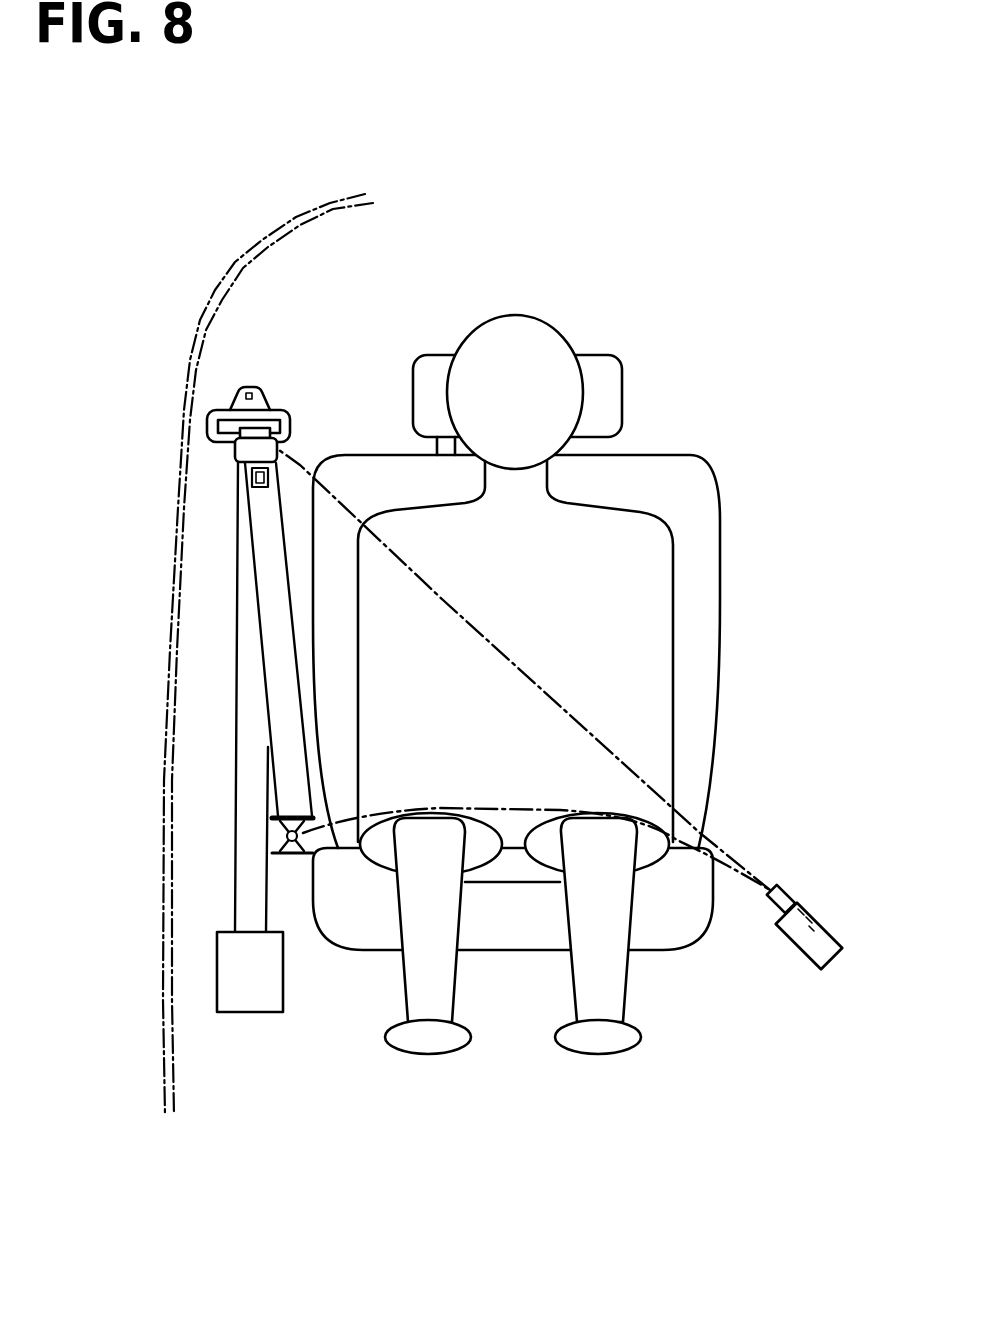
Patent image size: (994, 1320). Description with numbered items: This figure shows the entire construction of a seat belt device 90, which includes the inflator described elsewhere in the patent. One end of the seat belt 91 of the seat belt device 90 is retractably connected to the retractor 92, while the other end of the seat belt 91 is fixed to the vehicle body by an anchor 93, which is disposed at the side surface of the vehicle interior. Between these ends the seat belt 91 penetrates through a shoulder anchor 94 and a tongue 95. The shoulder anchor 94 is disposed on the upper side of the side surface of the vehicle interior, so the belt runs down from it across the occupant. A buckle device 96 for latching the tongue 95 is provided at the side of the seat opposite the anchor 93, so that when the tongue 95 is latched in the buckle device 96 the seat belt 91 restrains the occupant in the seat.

The seat belt device 90 is at (228, 1132).
The seat belt 91 is at (247, 868).
The retractor 92 is at (227, 980).
The anchor 93 is at (290, 855).
The shoulder anchor 94 is at (260, 408).
The tongue 95 is at (235, 448).
The buckle device 96 is at (818, 940).